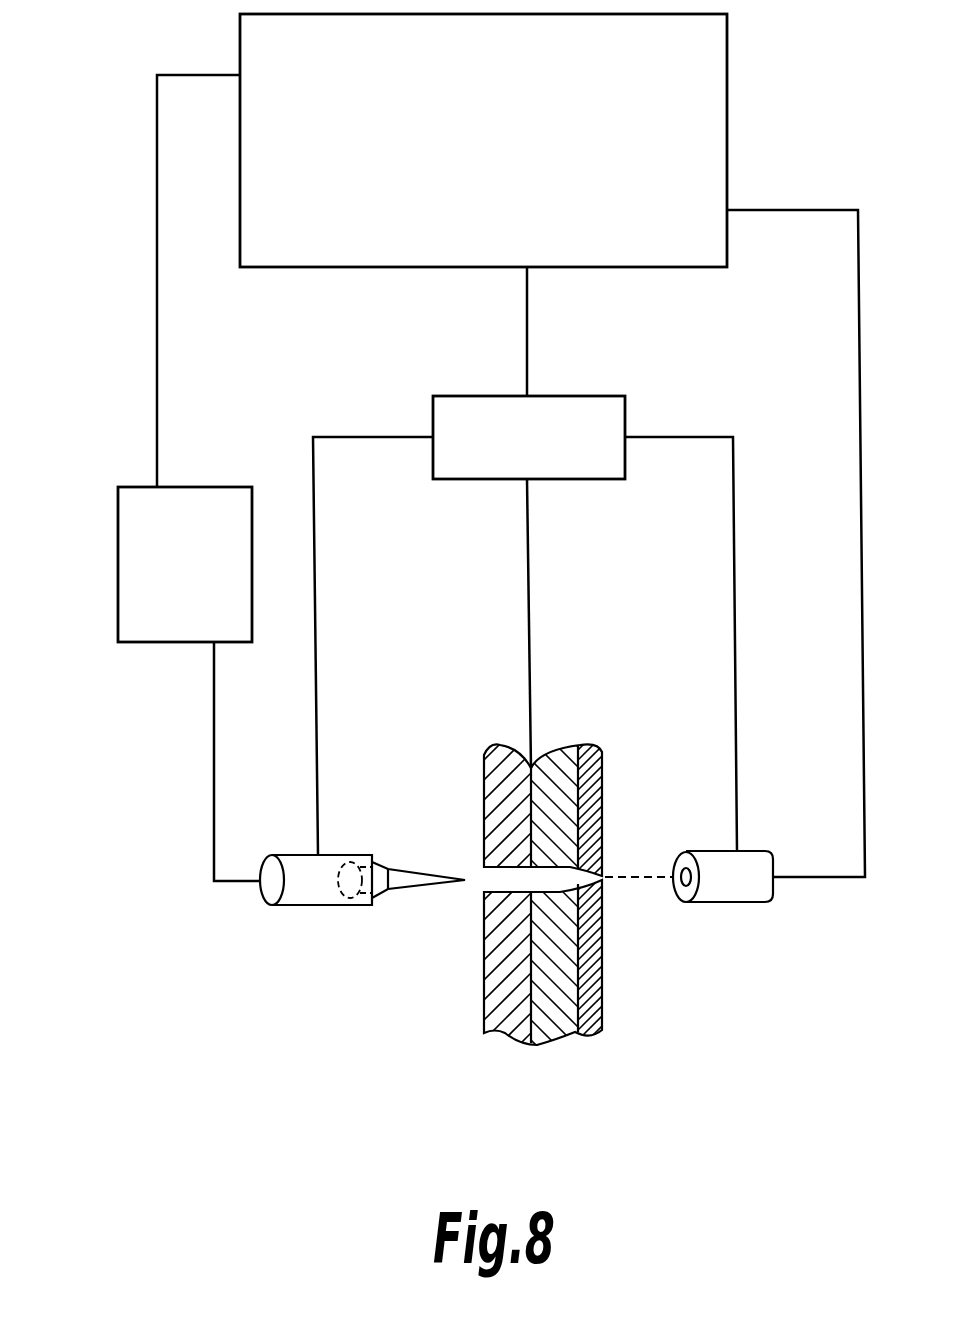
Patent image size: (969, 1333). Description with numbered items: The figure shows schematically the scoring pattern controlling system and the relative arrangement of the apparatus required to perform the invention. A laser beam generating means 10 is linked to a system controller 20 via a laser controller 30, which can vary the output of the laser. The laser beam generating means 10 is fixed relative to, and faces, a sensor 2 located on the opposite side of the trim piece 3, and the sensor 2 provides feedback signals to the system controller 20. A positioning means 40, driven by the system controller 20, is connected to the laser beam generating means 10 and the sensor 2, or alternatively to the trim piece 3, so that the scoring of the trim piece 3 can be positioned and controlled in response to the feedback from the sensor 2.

The system controller 20 is at (698, 66).
The positioning means 40 is at (594, 452).
The laser controller 30 is at (136, 554).
The laser beam generating means 10 is at (310, 893).
The trim piece 3 is at (582, 1072).
The sensor 2 is at (735, 890).